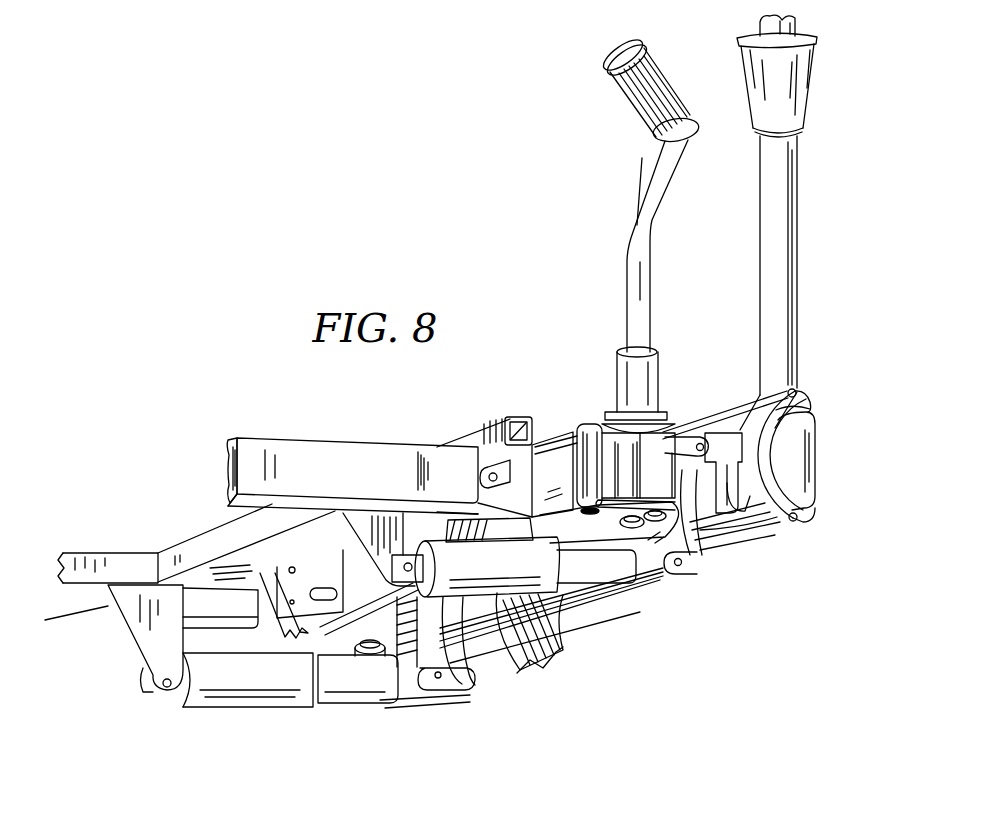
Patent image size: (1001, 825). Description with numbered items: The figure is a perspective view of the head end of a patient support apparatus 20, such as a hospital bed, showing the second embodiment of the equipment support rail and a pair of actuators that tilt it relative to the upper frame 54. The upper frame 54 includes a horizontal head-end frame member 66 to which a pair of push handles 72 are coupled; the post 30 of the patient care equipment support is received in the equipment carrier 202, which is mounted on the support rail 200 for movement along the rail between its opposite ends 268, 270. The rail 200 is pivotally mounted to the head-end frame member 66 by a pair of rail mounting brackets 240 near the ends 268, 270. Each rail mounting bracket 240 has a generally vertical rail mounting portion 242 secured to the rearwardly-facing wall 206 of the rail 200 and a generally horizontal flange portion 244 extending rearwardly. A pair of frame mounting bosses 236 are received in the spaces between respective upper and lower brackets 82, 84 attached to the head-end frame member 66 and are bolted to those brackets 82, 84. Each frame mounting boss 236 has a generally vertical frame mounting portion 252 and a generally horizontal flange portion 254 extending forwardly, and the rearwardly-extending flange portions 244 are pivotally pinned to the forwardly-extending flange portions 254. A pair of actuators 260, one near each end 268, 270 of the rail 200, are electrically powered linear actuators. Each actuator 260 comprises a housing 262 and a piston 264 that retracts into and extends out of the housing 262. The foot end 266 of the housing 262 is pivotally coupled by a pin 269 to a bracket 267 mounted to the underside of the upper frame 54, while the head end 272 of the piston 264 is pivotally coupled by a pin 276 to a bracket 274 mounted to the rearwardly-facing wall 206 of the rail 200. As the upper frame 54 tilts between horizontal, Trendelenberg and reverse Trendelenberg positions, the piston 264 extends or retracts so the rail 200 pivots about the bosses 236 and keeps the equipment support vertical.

The patient support apparatus 20 is at (182, 410).
The post 30 is at (790, 186).
The upper frame 54 is at (355, 470).
The head-end frame member 66 is at (565, 430).
The push handles 72 is at (640, 96).
The upper bracket 82 is at (607, 430).
The lower bracket 84 is at (603, 530).
The support rail 200 is at (748, 548).
The equipment carrier 202 is at (819, 463).
The rearwardly-facing wall 206 is at (748, 430).
The frame mounting boss 236 is at (628, 477).
The rail mounting bracket 240 is at (726, 412).
The rail mounting portion 242 is at (762, 522).
The flange portion 244 is at (723, 443).
The frame mounting portion 252 is at (705, 545).
The flange portion 254 is at (688, 437).
The actuator 260 is at (485, 600).
The housing 262 is at (548, 567).
The piston 264 is at (410, 683).
The foot end 266 is at (155, 692).
The bracket 267 is at (157, 645).
The end 268 is at (367, 508).
The pin 269 is at (167, 687).
The end 270 is at (400, 712).
The head end 272 is at (410, 685).
The bracket 274 is at (703, 582).
The pin 276 is at (440, 680).